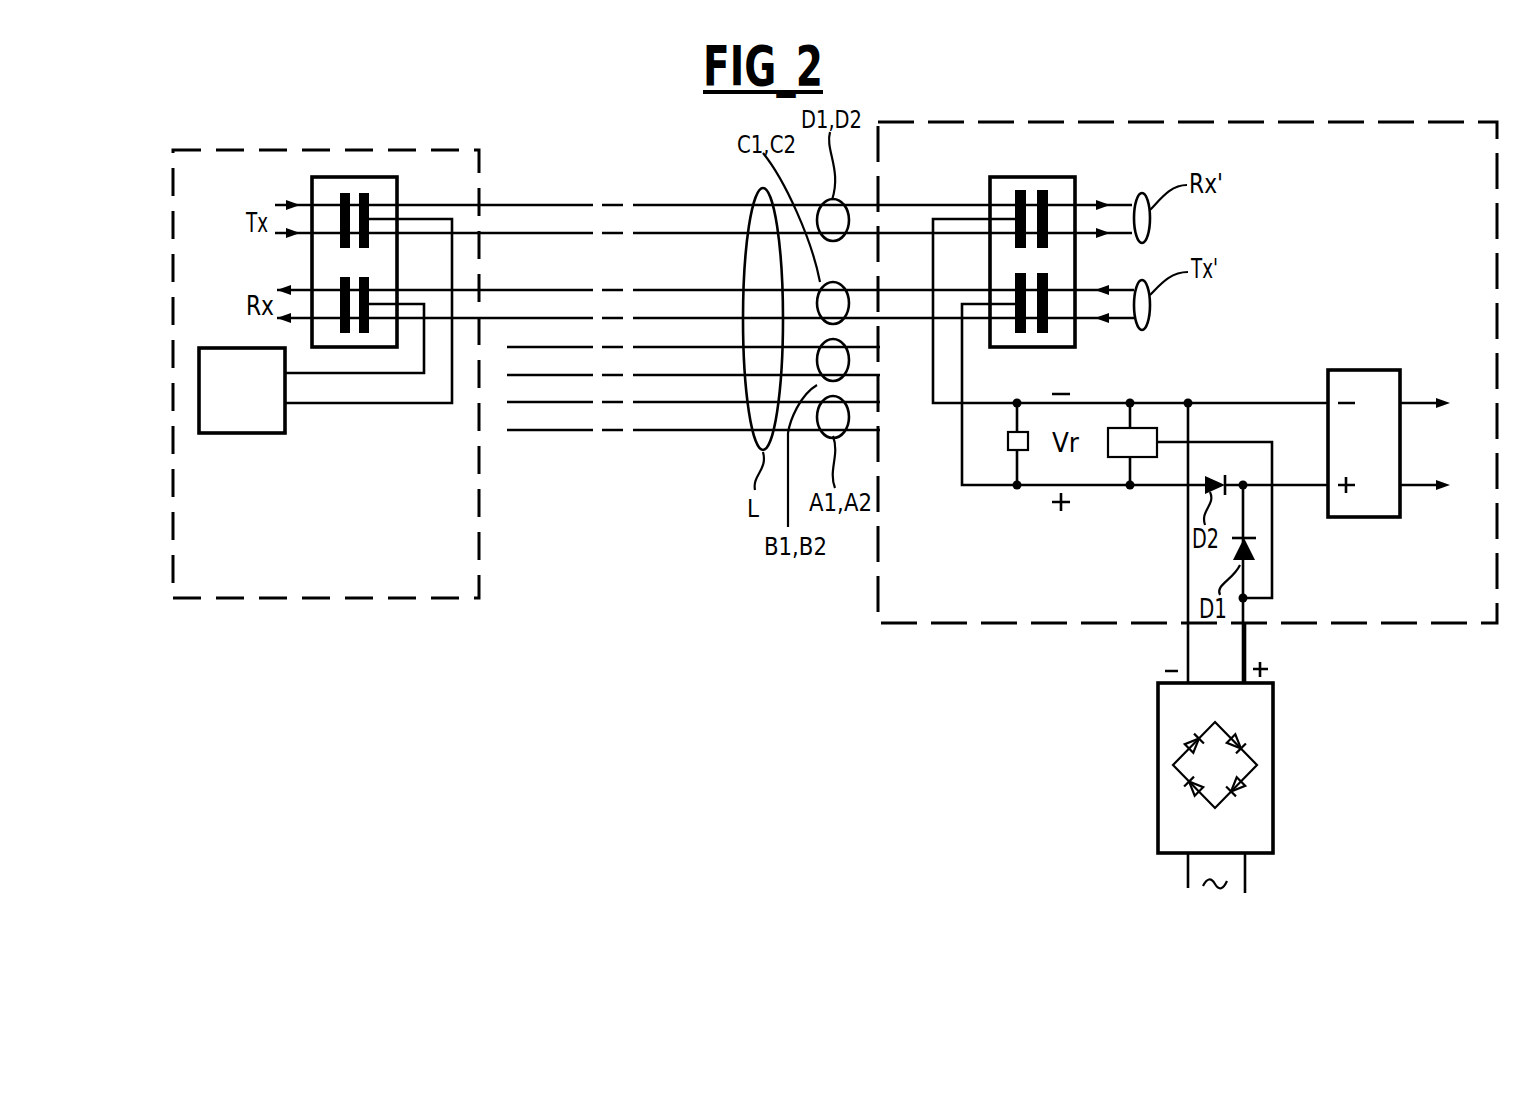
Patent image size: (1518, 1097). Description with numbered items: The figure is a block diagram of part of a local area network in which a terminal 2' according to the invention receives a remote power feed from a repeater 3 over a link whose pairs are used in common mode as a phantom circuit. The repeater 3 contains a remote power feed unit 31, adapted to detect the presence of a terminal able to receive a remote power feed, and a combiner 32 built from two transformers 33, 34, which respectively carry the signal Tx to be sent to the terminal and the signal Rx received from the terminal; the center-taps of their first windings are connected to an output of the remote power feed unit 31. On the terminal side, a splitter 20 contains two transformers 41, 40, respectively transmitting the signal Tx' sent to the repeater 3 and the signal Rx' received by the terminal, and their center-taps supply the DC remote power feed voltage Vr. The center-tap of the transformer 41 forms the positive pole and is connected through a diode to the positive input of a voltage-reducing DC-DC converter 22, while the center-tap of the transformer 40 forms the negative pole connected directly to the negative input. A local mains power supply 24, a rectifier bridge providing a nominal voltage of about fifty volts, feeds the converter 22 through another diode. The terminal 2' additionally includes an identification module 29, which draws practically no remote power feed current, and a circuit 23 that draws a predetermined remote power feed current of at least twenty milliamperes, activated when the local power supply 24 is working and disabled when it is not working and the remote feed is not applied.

The repeater 3 is at (323, 150).
The remote power feed unit 31 is at (205, 348).
The combiner 32 is at (323, 278).
The transformer 33 is at (338, 193).
The transformer 34 is at (345, 333).
The terminal 2' is at (1187, 347).
The splitter 20 is at (1045, 229).
The transformer 40 is at (1022, 190).
The transformer 41 is at (1042, 333).
The voltage-reducing DC-DC converter 22 is at (1368, 370).
The circuit for drawing a predetermined remote power feed current 23 is at (1148, 457).
The identification module 29 is at (1008, 441).
The mains power supply 24 is at (1273, 735).